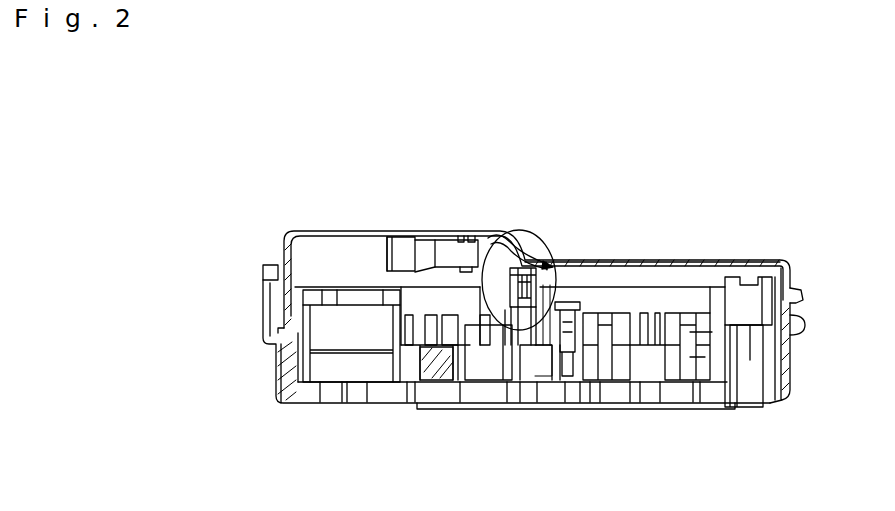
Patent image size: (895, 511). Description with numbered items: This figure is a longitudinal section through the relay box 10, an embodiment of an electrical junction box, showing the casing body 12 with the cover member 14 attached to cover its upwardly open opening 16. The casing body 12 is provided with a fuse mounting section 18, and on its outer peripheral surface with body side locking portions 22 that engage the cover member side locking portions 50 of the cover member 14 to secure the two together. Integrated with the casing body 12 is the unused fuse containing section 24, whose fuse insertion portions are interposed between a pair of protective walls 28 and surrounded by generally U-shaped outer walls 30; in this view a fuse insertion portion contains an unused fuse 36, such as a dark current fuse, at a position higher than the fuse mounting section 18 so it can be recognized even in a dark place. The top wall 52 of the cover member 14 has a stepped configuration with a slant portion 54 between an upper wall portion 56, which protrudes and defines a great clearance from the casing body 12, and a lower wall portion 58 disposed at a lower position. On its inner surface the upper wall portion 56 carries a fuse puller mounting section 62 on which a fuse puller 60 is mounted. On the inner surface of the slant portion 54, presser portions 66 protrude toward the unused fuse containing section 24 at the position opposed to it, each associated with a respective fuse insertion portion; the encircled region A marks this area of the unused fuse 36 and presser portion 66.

The relay box 10 is at (182, 216).
The casing body 12 is at (253, 300).
The cover member 14 is at (271, 250).
The opening 16 is at (765, 277).
The fuse mounting section 18 is at (572, 300).
The body side locking portion 22 is at (801, 310).
The unused fuse containing section 24 is at (486, 300).
The protective wall 28 is at (541, 332).
The outer wall 30 is at (481, 277).
The unused fuse 36 is at (549, 258).
The cover member side locking portion 50 is at (803, 332).
The top wall 52 is at (377, 222).
The slant portion 54 is at (540, 268).
The upper wall portion 56 is at (398, 233).
The lower wall portion 58 is at (662, 262).
The fuse puller 60 is at (424, 251).
The fuse puller mounting section 62 is at (468, 233).
The presser portion 66 is at (518, 245).
The detail region A is at (503, 298).